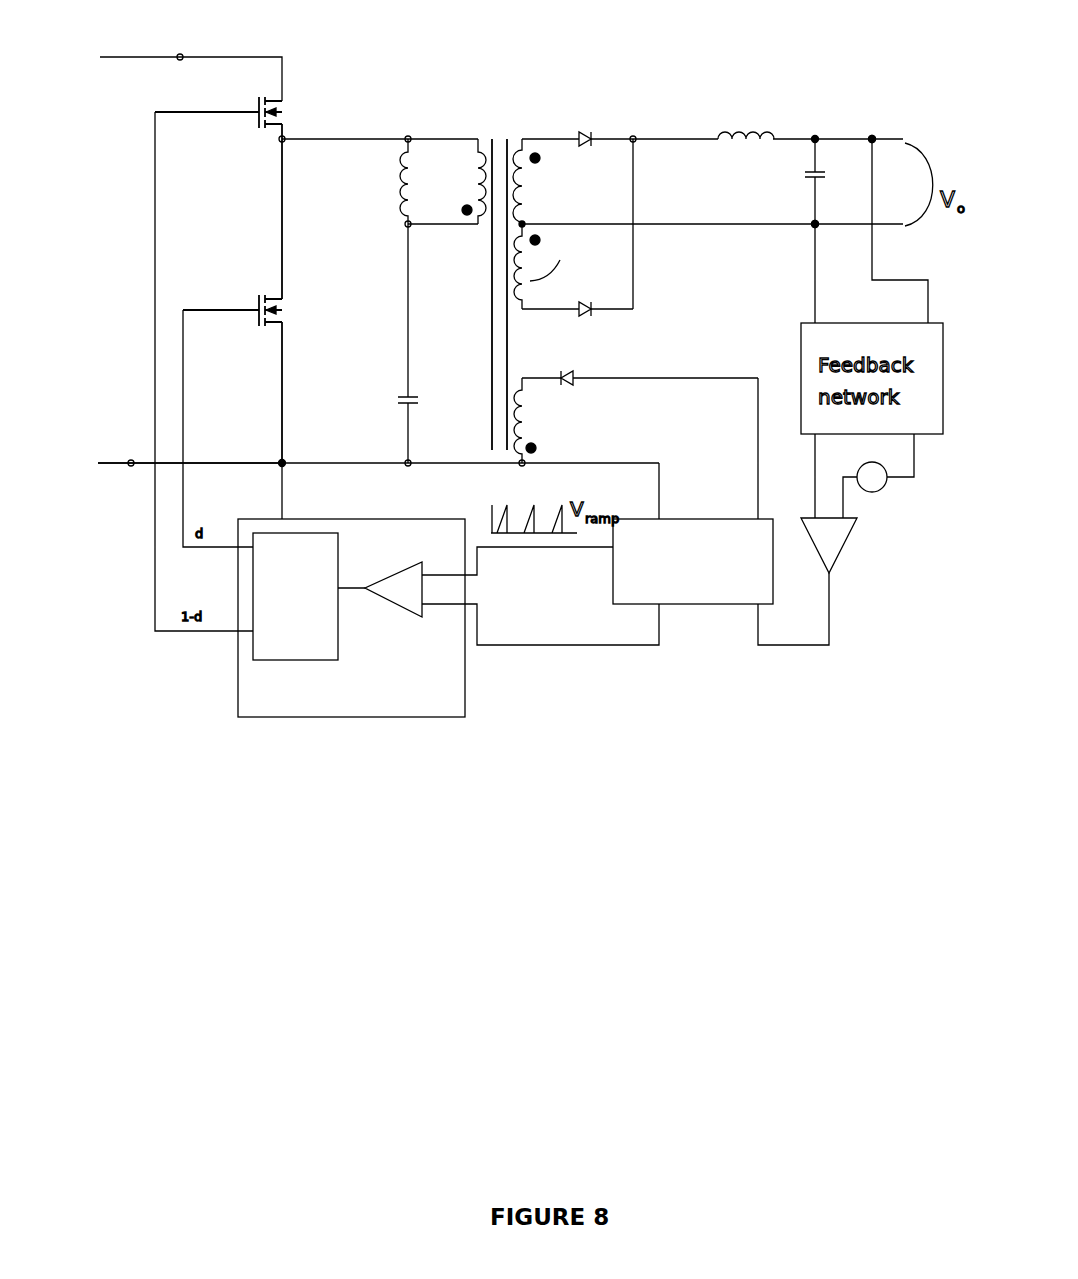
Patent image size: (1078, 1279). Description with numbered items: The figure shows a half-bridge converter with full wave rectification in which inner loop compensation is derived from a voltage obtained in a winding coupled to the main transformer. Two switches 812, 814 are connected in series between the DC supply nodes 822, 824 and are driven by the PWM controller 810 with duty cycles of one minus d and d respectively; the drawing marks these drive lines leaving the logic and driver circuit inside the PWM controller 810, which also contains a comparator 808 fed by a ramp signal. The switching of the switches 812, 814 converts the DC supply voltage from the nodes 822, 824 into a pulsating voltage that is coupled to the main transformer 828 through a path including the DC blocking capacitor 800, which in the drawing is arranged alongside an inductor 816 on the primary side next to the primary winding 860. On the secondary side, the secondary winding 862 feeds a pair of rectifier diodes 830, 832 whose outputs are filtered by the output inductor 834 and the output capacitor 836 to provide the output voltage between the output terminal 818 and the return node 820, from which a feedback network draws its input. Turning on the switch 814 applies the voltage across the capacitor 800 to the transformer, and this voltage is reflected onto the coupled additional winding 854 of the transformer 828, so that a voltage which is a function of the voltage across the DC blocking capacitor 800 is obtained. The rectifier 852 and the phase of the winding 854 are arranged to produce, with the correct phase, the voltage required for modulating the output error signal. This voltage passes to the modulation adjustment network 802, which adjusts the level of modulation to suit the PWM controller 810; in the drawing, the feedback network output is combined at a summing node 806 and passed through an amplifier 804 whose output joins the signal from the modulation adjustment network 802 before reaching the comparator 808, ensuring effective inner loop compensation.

The DC blocking capacitor 800 is at (398, 404).
The modulation adjustment network 802 is at (693, 561).
The error amplifier 804 is at (840, 563).
The summing node 806 is at (876, 493).
The comparator 808 is at (420, 562).
The PWM controller 810 is at (351, 618).
The switch 812 is at (288, 113).
The switch 814 is at (288, 310).
The inductor 816 is at (405, 180).
The output terminal 818 is at (855, 132).
The output return node 820 is at (806, 226).
The node 822 is at (178, 52).
The node 824 is at (135, 455).
The main transformer 828 is at (505, 130).
The rectifier diode 830 is at (585, 128).
The rectifier diode 832 is at (589, 322).
The output inductor 834 is at (745, 125).
The output capacitor 836 is at (810, 185).
The rectifier 852 is at (578, 368).
The additional winding 854 is at (527, 418).
The primary winding 860 is at (472, 194).
The secondary winding 862 is at (528, 197).